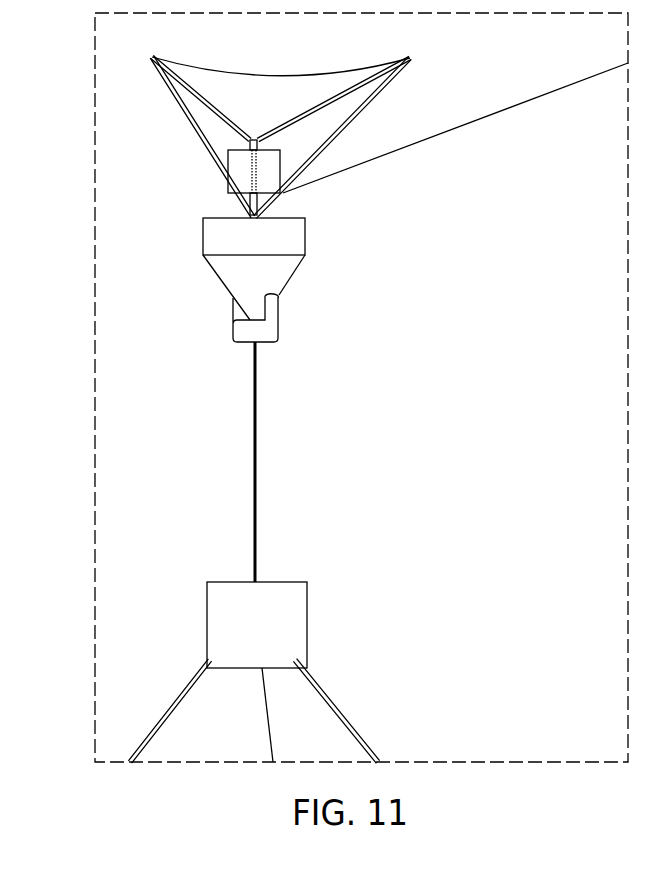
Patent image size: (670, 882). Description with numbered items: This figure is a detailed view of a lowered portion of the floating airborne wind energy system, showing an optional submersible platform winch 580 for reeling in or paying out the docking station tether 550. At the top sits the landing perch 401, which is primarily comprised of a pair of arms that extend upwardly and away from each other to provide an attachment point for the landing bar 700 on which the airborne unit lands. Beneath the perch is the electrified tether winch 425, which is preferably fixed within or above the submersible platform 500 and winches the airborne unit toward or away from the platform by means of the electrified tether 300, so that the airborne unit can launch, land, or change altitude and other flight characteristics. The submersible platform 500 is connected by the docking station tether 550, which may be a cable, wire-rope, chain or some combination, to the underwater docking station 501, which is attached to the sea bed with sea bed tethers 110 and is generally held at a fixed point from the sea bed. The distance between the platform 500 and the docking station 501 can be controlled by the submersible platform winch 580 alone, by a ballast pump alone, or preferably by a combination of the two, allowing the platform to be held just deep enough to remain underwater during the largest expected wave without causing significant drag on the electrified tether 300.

The landing bar 700 is at (281, 75).
The landing perch 401 is at (189, 144).
The electrified tether winch 425 is at (242, 180).
The submersible platform 500 is at (200, 252).
The submersible platform winch 580 is at (237, 327).
The docking station tether 550 is at (257, 495).
The underwater docking station 501 is at (233, 623).
The sea bed tethers 110 is at (166, 708).
The electrified tether 300 is at (539, 112).